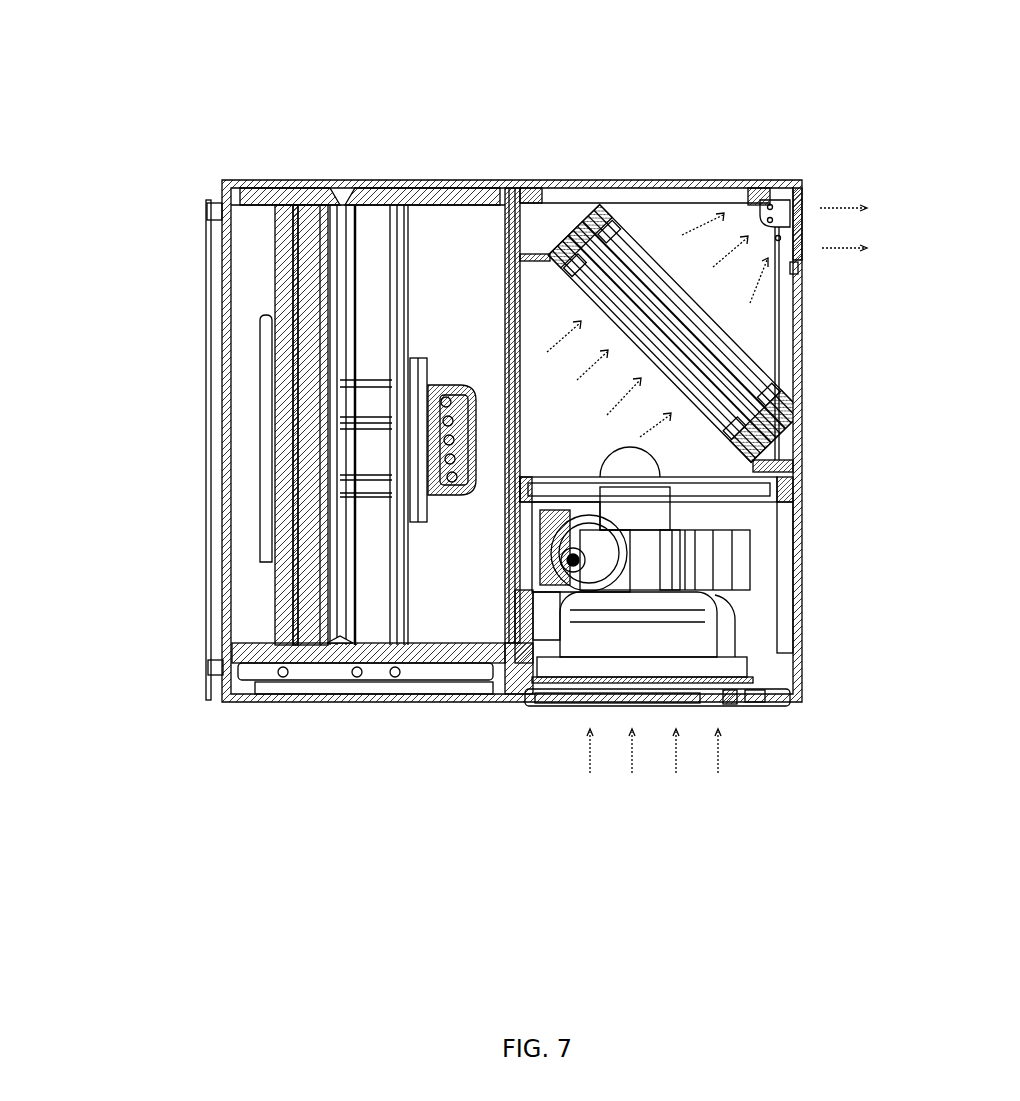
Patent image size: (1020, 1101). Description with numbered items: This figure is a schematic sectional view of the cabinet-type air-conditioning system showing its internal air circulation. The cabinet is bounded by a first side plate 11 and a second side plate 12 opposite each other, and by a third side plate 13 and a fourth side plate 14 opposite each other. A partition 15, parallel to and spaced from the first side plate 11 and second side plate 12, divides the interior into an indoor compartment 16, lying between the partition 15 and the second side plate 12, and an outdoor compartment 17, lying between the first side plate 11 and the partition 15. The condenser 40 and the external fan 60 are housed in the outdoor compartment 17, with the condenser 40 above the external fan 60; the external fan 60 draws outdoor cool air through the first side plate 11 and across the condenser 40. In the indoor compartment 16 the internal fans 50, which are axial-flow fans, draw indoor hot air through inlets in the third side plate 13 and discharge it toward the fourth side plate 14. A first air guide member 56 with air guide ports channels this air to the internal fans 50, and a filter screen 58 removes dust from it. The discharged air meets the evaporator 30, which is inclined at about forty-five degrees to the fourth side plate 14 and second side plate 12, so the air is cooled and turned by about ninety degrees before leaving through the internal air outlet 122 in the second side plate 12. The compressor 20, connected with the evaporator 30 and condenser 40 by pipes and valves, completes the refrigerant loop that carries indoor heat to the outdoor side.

The first side plate 11 is at (217, 373).
The second side plate 12 is at (800, 458).
The internal air outlet 122 is at (801, 208).
The third side plate 13 is at (555, 700).
The fourth side plate 14 is at (515, 190).
The partition 15 is at (505, 320).
The indoor compartment 16 is at (668, 218).
The outdoor compartment 17 is at (438, 614).
The compressor 20 is at (718, 543).
The evaporator 30 is at (772, 362).
The condenser 40 is at (300, 210).
The internal fan 50 is at (718, 610).
The first air guide member 56 is at (638, 688).
The filter screen 58 is at (700, 695).
The external fan 60 is at (290, 700).